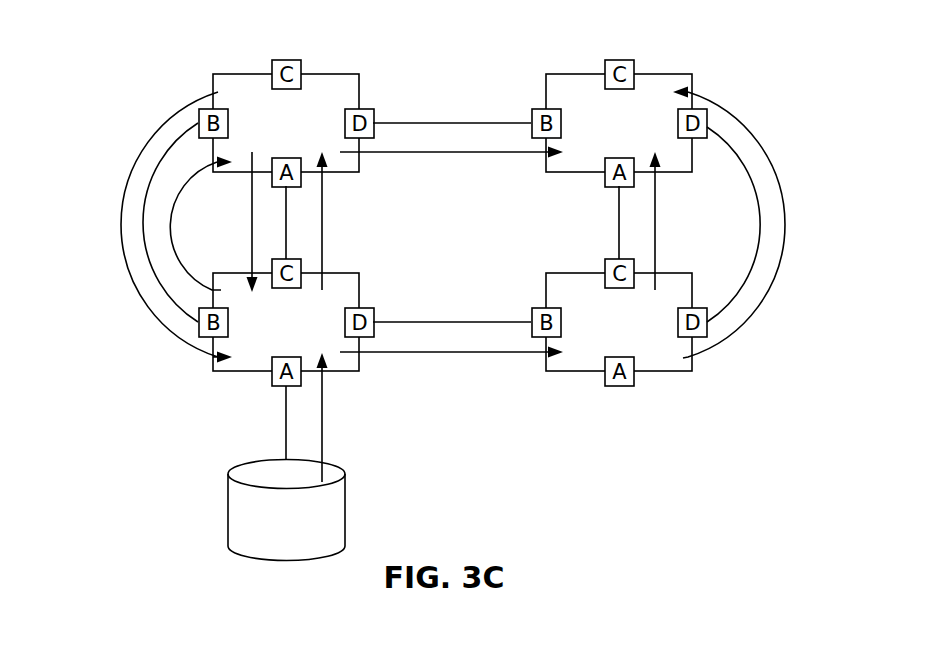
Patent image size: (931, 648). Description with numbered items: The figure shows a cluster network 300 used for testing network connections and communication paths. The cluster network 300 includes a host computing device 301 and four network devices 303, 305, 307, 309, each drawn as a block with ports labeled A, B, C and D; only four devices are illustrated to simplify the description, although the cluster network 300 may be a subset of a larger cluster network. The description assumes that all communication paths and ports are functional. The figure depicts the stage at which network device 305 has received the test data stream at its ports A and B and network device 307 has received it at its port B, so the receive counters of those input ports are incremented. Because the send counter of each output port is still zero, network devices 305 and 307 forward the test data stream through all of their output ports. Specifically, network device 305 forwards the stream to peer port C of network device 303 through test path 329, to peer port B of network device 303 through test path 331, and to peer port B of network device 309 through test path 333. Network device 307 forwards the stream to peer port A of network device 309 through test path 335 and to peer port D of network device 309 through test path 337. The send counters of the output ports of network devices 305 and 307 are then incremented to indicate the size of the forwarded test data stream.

The cluster network 300 is at (128, 30).
The host computing device 301 is at (228, 519).
The network device 303 is at (235, 372).
The network device 305 is at (246, 73).
The network device 307 is at (667, 372).
The network device 309 is at (658, 73).
The test path 329 is at (251, 233).
The test path 331 is at (122, 240).
The test path 333 is at (435, 153).
The test path 335 is at (656, 232).
The test path 337 is at (787, 221).